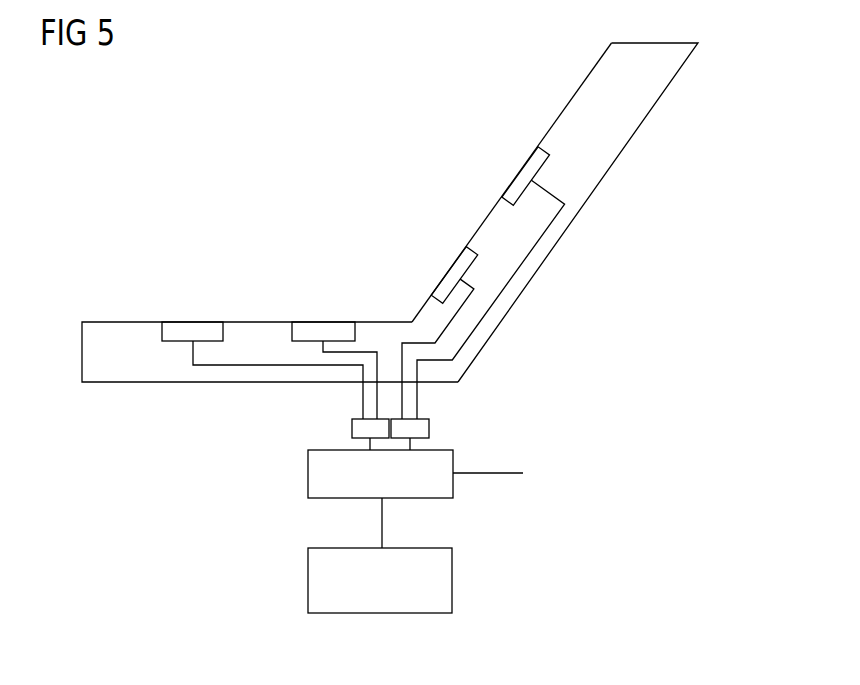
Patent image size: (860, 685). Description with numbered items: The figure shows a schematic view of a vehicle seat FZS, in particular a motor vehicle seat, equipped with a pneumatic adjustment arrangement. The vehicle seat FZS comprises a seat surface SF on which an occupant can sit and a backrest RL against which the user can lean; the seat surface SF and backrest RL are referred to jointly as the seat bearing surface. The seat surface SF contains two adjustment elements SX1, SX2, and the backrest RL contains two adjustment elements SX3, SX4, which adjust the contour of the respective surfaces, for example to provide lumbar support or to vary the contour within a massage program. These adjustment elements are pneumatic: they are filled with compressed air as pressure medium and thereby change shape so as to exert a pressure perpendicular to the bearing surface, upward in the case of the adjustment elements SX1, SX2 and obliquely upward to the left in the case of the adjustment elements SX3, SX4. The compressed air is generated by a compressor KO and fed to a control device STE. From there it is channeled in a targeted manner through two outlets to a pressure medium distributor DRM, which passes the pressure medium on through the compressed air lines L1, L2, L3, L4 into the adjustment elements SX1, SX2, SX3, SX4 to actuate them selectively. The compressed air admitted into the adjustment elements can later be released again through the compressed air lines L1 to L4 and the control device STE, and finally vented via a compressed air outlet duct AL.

The seat surface SF is at (110, 320).
The backrest RL is at (582, 83).
The vehicle seat FZS is at (643, 77).
The adjustment element SX1 is at (183, 320).
The adjustment element SX2 is at (328, 320).
The adjustment element SX3 is at (457, 262).
The adjustment element SX4 is at (520, 177).
The compressed air line L1 is at (223, 367).
The compressed air line L2 is at (370, 350).
The compressed air line L3 is at (453, 317).
The compressed air line L4 is at (528, 252).
The pressure medium distributor DRM is at (350, 428).
The control device STE is at (308, 478).
The compressed air outlet duct AL is at (487, 472).
The compressor KO is at (440, 577).